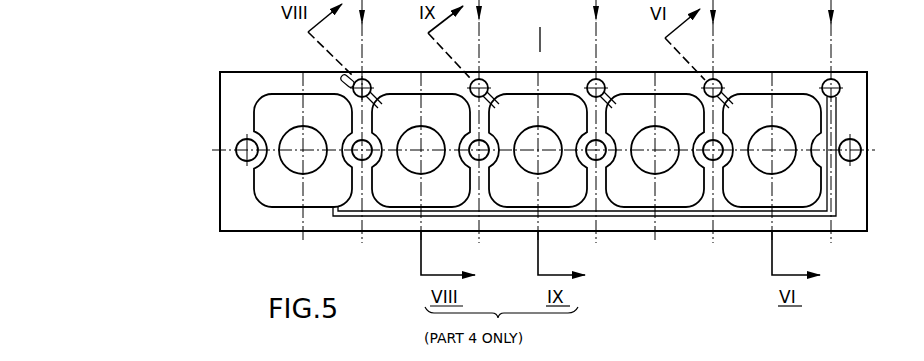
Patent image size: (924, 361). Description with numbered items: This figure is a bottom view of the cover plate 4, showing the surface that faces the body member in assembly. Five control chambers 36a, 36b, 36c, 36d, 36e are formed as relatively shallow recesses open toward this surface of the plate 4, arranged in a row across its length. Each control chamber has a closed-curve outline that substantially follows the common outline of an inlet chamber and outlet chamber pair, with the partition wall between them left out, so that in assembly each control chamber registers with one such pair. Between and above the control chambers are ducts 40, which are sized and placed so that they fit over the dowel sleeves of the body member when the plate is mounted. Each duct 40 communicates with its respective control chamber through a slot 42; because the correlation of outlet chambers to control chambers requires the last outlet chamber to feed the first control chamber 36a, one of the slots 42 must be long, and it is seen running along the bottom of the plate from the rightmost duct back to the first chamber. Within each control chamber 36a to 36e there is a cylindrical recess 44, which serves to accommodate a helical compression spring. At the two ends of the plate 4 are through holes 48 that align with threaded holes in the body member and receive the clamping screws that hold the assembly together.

The cover plate 4 is at (230, 80).
The control chamber 36a is at (321, 122).
The control chamber 36b is at (439, 122).
The control chamber 36c is at (556, 122).
The control chamber 36d is at (673, 122).
The control chamber 36e is at (790, 122).
The duct 40 is at (357, 79).
The slot 42 is at (375, 98).
The cylindrical recess 44 is at (300, 151).
The through hole 48 is at (236, 156).